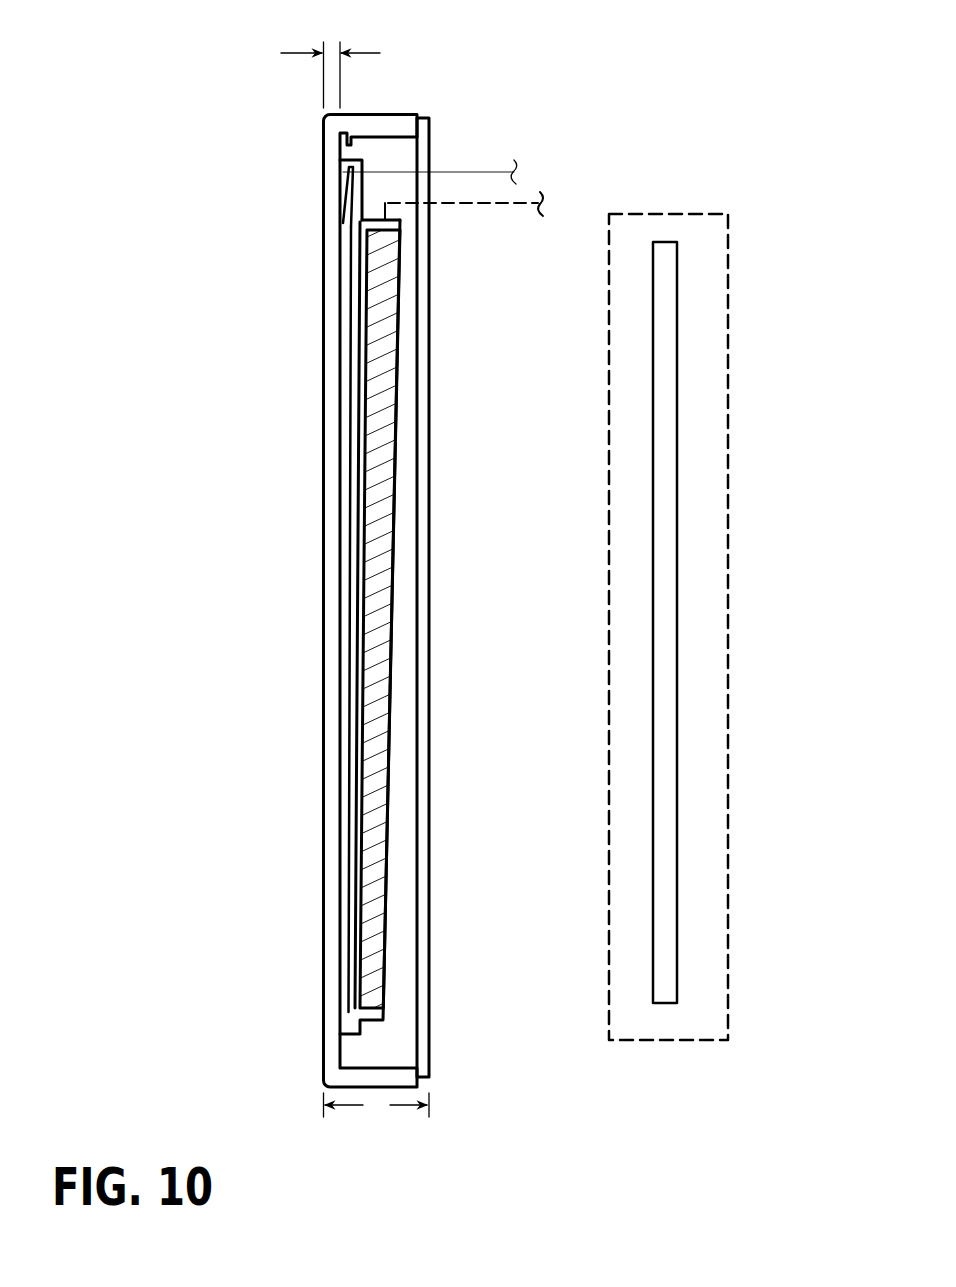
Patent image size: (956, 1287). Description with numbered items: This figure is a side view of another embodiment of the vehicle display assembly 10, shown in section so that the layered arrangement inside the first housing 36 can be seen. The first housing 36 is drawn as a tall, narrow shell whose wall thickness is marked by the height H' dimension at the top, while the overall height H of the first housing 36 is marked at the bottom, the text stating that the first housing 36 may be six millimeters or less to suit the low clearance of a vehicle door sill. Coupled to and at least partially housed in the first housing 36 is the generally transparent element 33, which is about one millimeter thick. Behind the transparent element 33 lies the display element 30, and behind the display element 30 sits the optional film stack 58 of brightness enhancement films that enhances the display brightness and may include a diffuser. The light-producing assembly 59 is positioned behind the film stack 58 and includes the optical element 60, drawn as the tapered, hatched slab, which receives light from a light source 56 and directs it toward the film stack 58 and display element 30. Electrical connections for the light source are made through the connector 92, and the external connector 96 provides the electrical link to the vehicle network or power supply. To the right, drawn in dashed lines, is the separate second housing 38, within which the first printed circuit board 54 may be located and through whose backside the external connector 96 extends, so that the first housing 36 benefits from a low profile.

The vehicle display assembly 10 is at (658, 92).
The display element 30 is at (352, 320).
The transparent element 33 is at (323, 176).
The first housing 36 is at (387, 113).
The second housing 38 is at (700, 213).
The first printed circuit board 54 is at (665, 393).
The light source 56 is at (355, 226).
The film stack 58 is at (356, 448).
The light-producing assembly 59 is at (408, 229).
The optical element 60 is at (378, 601).
The connector 92 is at (523, 203).
The external connector 96 is at (478, 170).